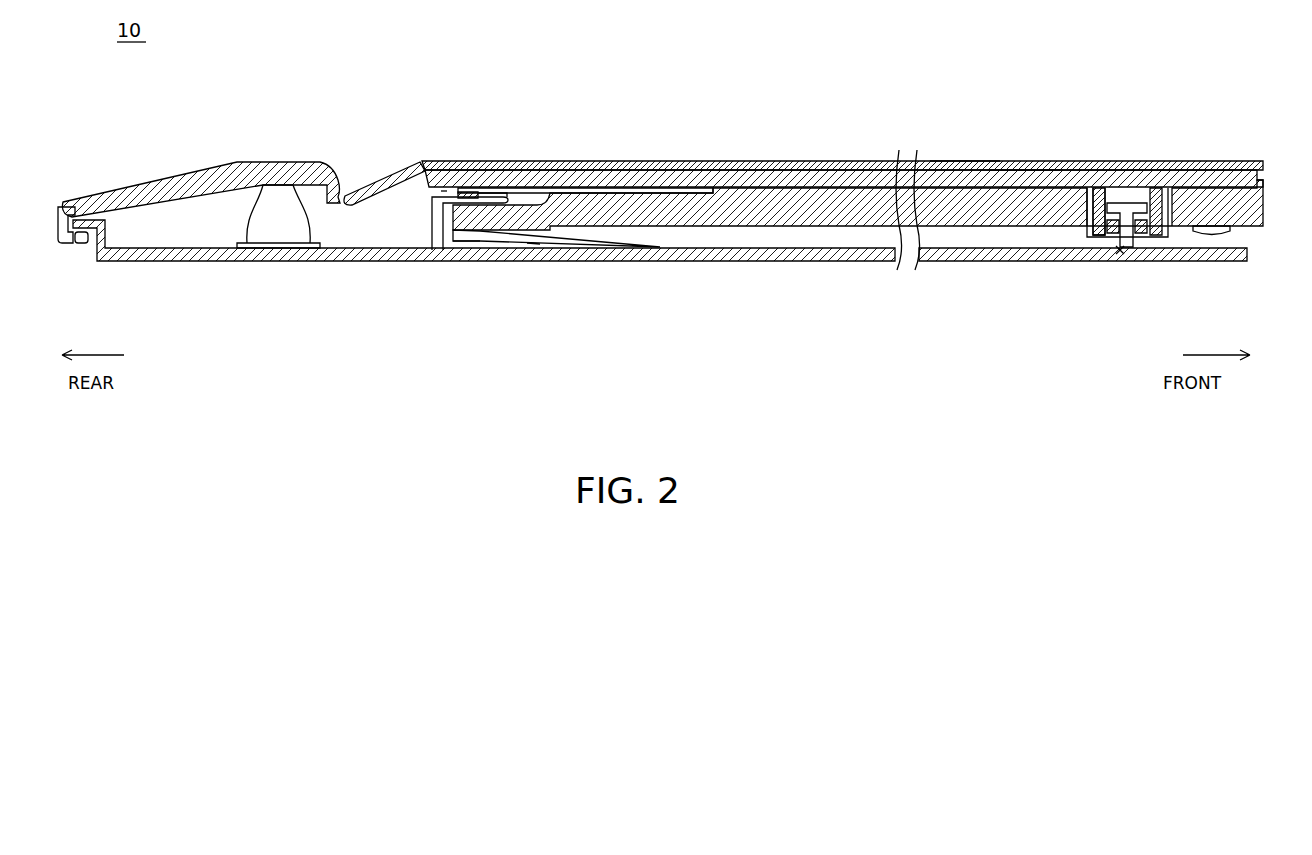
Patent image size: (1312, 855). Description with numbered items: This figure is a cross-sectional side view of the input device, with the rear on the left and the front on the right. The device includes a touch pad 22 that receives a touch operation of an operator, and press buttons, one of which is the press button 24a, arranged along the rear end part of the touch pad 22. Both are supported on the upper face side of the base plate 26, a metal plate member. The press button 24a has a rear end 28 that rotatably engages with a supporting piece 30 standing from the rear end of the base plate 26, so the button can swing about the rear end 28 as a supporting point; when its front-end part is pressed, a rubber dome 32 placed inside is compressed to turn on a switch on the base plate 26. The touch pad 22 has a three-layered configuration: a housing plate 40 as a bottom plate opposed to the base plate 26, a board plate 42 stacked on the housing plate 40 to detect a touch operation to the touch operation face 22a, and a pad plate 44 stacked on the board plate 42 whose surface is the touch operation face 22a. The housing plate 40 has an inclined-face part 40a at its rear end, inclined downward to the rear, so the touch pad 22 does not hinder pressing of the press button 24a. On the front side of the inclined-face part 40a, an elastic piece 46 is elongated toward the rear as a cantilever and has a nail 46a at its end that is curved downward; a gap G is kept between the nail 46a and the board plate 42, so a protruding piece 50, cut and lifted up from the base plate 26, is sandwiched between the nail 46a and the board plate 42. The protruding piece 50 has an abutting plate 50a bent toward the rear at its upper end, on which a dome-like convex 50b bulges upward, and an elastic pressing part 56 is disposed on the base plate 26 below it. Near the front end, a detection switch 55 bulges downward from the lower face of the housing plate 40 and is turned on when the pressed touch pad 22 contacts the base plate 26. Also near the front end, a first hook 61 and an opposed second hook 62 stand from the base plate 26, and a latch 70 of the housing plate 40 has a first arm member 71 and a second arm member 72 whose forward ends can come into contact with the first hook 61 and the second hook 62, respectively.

The touch pad 22 is at (682, 161).
The touch operation face 22a is at (806, 172).
The press button 24a is at (163, 180).
The base plate 26 is at (735, 261).
The rear end 28 is at (58, 215).
The supporting piece 30 is at (80, 246).
The rubber dome 32 is at (273, 232).
The housing plate 40 is at (1048, 200).
The inclined-face part 40a is at (366, 182).
The board plate 42 is at (1002, 176).
The pad plate 44 is at (943, 162).
The elastic piece 46 is at (565, 188).
The nail 46a is at (478, 243).
The protruding piece 50 is at (432, 222).
The abutting plate 50a is at (514, 190).
The dome-like convex 50b is at (478, 192).
The detection switch 55 is at (1211, 236).
The elastic pressing part 56 is at (528, 246).
The first hook 61 is at (1098, 195).
The second hook 62 is at (1148, 183).
The latch 70 is at (1121, 255).
The first arm member 71 is at (1110, 235).
The second arm member 72 is at (1145, 235).
The gap G is at (441, 191).